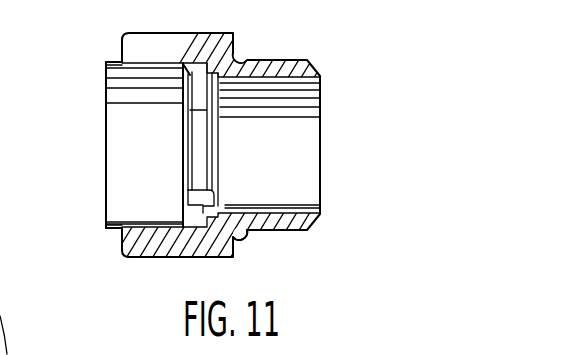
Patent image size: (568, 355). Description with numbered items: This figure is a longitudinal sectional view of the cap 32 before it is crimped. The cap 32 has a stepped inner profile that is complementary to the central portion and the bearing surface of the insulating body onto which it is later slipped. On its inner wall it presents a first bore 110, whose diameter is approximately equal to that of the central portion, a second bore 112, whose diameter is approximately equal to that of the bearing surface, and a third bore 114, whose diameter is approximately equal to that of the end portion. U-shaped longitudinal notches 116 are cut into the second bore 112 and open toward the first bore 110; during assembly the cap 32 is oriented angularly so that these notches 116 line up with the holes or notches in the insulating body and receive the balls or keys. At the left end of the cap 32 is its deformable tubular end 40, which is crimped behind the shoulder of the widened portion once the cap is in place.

The cap 32 is at (331, 54).
The deformable tubular end 40 is at (118, 228).
The first bore 110 is at (137, 66).
The second bore 112 is at (240, 213).
The third bore 114 is at (298, 204).
The U-shaped longitudinal notches 116 is at (200, 194).